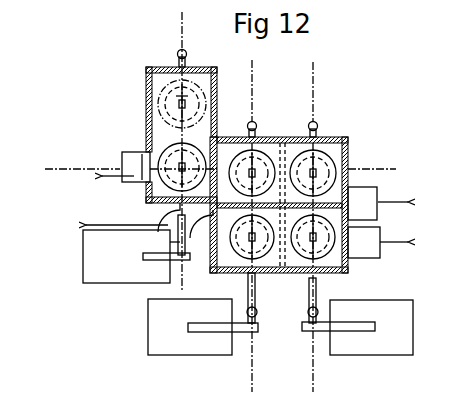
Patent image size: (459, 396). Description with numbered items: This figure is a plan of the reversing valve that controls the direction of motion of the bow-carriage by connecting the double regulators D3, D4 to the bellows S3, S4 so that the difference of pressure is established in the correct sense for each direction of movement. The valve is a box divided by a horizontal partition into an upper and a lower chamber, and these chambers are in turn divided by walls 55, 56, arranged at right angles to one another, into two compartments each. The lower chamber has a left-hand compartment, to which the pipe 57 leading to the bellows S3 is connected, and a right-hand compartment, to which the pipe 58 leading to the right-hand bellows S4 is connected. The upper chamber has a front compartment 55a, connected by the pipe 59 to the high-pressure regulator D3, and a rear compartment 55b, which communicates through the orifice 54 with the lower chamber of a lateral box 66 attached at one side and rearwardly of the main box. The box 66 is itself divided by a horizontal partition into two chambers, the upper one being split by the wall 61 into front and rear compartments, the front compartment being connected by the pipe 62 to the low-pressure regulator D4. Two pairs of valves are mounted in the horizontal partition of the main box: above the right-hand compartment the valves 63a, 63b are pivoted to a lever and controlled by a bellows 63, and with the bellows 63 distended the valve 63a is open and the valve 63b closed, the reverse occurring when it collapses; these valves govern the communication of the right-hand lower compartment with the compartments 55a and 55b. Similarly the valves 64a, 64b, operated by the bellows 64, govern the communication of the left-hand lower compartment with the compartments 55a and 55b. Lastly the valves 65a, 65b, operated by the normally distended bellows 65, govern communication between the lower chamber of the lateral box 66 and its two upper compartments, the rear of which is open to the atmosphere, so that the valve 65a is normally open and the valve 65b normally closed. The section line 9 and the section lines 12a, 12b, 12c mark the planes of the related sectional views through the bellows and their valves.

The section line 9 is at (223, 170).
The section line 12a is at (292, 72).
The section line 12b is at (274, 83).
The section line 12c is at (202, 285).
The orifice 54 is at (223, 158).
The dividing wall 55 is at (279, 205).
The front compartment of upper chamber 55a is at (229, 262).
The rear compartment of upper chamber 55b is at (272, 150).
The dividing wall 56 is at (292, 262).
The pipe 57 is at (191, 232).
The pipe 58 is at (362, 203).
The pipe 59 is at (364, 242).
The dividing wall 61 is at (217, 135).
The pipe 62 is at (137, 186).
The bellows 63 is at (357, 316).
The valve 63a is at (323, 258).
The valve 63b is at (323, 148).
The bellows 64 is at (203, 314).
The valve 64a is at (260, 259).
The valve 64b is at (258, 148).
The bellows 65 is at (136, 256).
The valve 65a is at (122, 157).
The valve 65b is at (150, 105).
The lateral box 66 is at (146, 73).
The bellows S3 is at (115, 222).
The bellows S4 is at (394, 191).
The high-pressure regulator D3 is at (394, 230).
The low-pressure regulator D4 is at (113, 187).